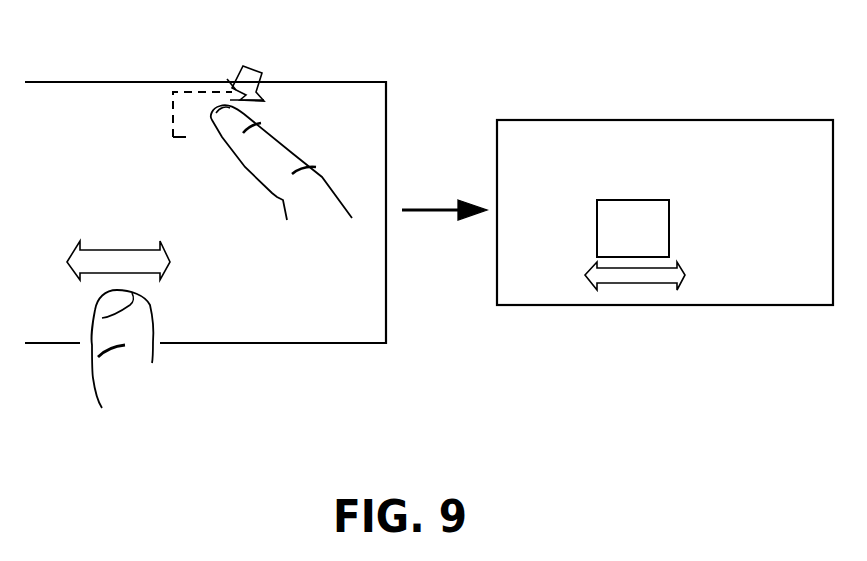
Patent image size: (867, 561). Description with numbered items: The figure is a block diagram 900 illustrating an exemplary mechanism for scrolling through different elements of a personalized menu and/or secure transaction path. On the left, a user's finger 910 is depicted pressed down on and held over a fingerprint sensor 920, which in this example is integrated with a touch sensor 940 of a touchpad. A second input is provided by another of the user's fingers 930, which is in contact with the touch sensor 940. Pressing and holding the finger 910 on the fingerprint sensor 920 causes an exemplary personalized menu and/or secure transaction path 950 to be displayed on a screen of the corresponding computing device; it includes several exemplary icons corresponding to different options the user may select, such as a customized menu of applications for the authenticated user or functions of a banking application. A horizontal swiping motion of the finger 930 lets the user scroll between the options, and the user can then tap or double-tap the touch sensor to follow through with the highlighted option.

The block diagram 900 is at (559, 480).
The user's finger 910 is at (285, 142).
The fingerprint sensor 920 is at (175, 137).
The user's finger 930 is at (148, 325).
The touch sensor 940 is at (318, 330).
The personalized menu and/or secure transaction path 950 is at (540, 293).